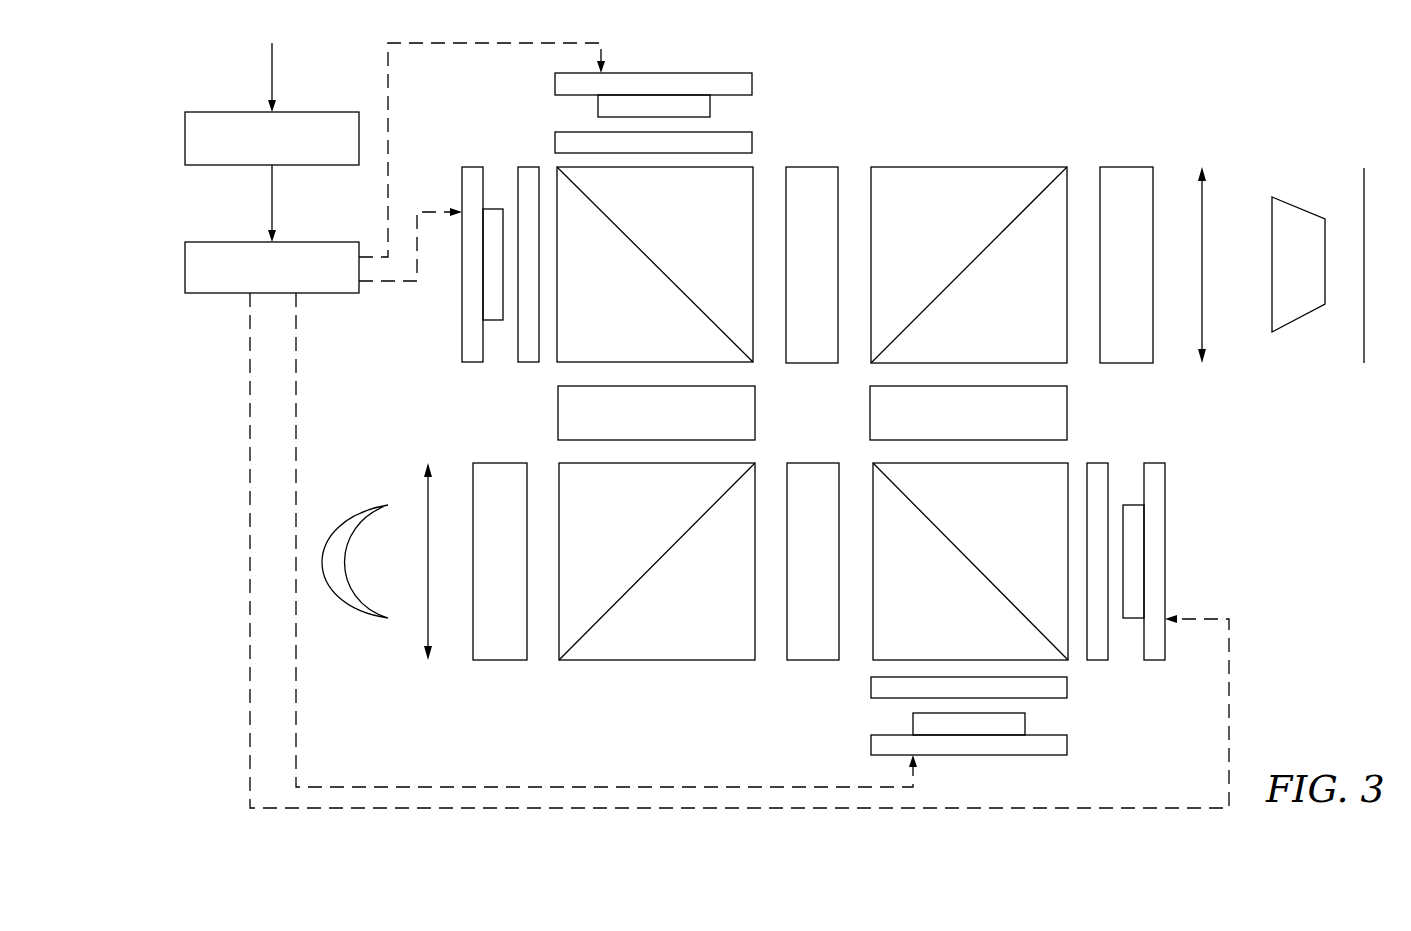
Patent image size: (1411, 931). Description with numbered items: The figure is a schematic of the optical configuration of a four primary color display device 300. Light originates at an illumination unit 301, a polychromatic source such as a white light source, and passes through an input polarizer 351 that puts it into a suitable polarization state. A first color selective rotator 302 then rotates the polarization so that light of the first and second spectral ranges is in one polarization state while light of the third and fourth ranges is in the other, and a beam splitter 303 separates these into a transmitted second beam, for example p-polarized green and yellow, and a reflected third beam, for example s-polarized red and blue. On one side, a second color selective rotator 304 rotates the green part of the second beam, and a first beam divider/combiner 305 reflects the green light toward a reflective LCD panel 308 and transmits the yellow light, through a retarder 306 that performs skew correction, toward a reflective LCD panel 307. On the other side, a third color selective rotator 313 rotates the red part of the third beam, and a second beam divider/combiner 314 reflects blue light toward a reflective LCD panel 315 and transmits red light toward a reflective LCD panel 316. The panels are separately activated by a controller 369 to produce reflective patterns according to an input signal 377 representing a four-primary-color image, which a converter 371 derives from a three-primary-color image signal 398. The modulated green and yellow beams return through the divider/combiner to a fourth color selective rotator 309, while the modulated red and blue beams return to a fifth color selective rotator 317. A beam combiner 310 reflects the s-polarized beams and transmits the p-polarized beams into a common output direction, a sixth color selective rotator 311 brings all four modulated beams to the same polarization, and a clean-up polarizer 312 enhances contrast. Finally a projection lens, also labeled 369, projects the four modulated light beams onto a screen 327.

The display device 300 is at (1306, 694).
The illumination unit 301 is at (355, 507).
The first color selective rotator 302 is at (500, 661).
The beam splitter 303 is at (655, 661).
The second color selective rotator 304 is at (813, 661).
The first beam divider/combiner 305 is at (1070, 648).
The retarder 306 is at (1098, 661).
The reflective LCD panel 307 is at (1165, 553).
The reflective LCD panel 308 is at (970, 757).
The fourth color selective rotator 309 is at (1067, 411).
The beam combiner 310 is at (970, 167).
The sixth color selective rotator 311 is at (1122, 167).
The clean-up polarizer 312 is at (1203, 327).
The third color selective rotator 313 is at (558, 411).
The second beam divider/combiner 314 is at (557, 167).
The reflective LCD panel 315 is at (462, 318).
The reflective LCD panel 316 is at (655, 73).
The fifth color selective rotator 317 is at (810, 167).
The screen 327 is at (1363, 330).
The input polarizer 351 is at (425, 627).
The controller 369 is at (222, 293).
The converter 371 is at (217, 165).
The input signal 377 is at (272, 183).
The three-primary-color image signal 398 is at (272, 52).